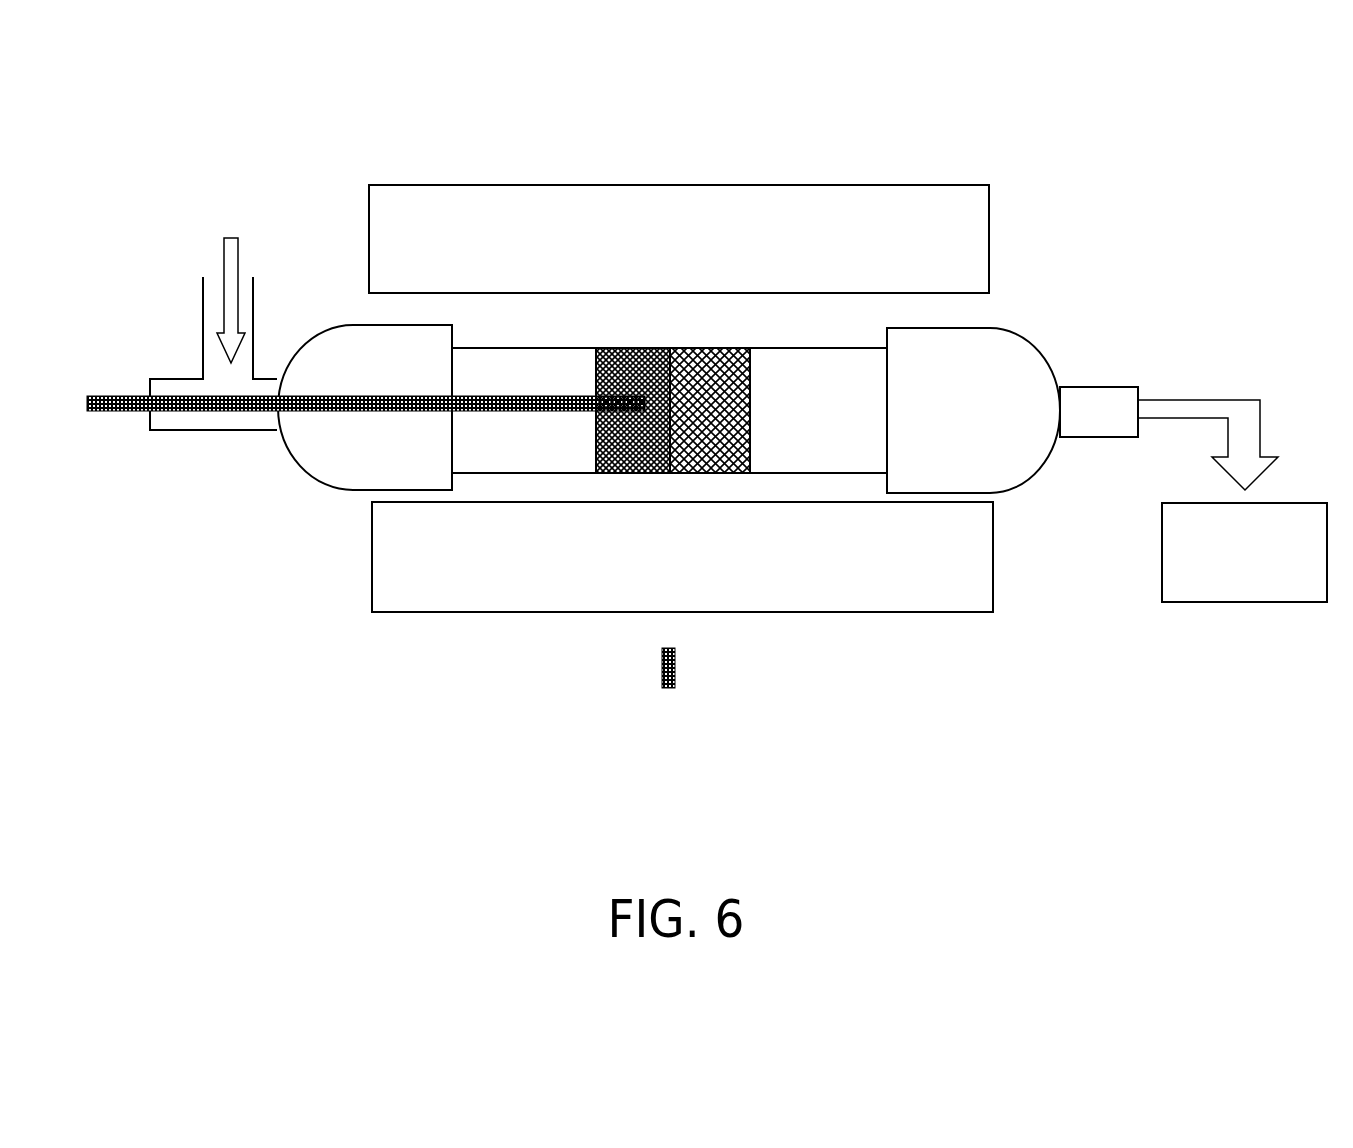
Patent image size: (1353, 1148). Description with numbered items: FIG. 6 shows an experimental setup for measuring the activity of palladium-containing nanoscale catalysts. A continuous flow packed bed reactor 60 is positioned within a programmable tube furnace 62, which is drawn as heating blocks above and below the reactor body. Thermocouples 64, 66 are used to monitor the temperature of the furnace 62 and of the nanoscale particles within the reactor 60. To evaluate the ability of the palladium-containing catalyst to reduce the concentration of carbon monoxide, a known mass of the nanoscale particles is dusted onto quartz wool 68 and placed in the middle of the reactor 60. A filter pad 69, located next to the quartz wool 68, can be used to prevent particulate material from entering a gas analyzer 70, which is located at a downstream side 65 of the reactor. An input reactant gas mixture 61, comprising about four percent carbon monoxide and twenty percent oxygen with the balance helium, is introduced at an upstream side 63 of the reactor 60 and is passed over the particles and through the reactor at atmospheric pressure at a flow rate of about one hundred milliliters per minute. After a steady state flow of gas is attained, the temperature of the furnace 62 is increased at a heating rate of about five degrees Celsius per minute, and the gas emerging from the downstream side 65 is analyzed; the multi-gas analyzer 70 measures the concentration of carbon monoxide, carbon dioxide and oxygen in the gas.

The packed bed reactor 60 is at (206, 565).
The input reactant gas mixture 61 is at (230, 283).
The programmable tube furnace 62 is at (973, 244).
The upstream side 63 is at (230, 448).
The thermocouple 64 is at (555, 427).
The downstream side 65 is at (1092, 456).
The thermocouple 66 is at (646, 682).
The quartz wool 68 is at (603, 355).
The filter pad 69 is at (751, 458).
The gas analyzer 70 is at (1226, 568).